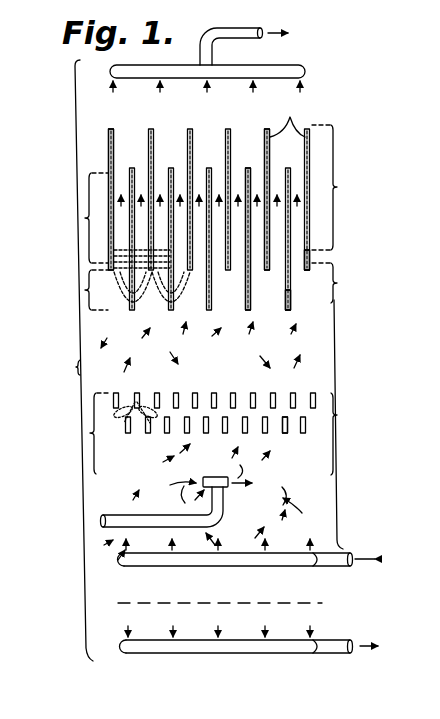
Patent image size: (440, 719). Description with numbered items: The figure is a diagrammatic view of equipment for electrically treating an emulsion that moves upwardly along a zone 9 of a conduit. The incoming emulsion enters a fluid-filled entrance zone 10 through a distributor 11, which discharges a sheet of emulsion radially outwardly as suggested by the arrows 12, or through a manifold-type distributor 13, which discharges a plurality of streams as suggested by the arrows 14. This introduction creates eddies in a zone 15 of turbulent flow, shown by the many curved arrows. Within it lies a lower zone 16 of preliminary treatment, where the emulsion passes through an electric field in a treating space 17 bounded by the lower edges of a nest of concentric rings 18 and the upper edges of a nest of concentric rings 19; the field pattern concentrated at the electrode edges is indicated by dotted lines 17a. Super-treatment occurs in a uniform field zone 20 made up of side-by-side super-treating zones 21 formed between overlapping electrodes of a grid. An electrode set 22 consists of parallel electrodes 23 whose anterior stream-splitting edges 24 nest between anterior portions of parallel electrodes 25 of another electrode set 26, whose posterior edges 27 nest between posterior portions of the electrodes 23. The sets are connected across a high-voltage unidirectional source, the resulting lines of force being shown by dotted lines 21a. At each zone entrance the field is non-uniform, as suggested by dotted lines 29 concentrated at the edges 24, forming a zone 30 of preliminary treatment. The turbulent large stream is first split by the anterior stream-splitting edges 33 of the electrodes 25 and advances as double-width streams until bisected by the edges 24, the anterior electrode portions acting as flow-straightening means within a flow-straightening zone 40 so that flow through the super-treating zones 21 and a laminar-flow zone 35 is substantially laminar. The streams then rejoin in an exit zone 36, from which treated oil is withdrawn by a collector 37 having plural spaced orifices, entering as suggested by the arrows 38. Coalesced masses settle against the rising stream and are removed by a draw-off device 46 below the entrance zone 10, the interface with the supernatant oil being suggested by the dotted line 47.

The zone of a conduit 9 is at (185, 360).
The entrance zone 10 is at (281, 495).
The distributor 11 is at (215, 477).
The arrows 12 is at (266, 486).
The manifold-type distributor 13 is at (196, 567).
The arrows 14 is at (172, 546).
The zone of turbulent flow 15 is at (365, 433).
The lower zone of preliminary treatment 16 is at (90, 433).
The treating space 17 is at (305, 411).
The dotted lines 17a is at (146, 436).
The nest of concentric rings 18 is at (295, 397).
The nest of concentric rings 19 is at (286, 434).
The uniform field zone 20 is at (85, 218).
The super-treating zones 21 is at (209, 219).
The dotted lines 21a is at (110, 252).
The electrode set 22 is at (265, 127).
The parallel electrodes 23 is at (282, 119).
The anterior stream-splitting edges 24 is at (308, 272).
The parallel electrodes 25 is at (289, 298).
The electrode set 26 is at (297, 309).
The posterior edges 27 is at (248, 166).
The dotted lines 29 is at (151, 307).
The zone of preliminary treatment 30 is at (85, 290).
The anterior stream-splitting edges 33 is at (305, 300).
The laminar-flow zone 35 is at (345, 187).
The exit zone 36 is at (312, 99).
The collector 37 is at (273, 61).
The arrows 38 is at (116, 86).
The flow-straightening zone 40 is at (364, 280).
The draw-off device 46 is at (297, 654).
The dotted line 47 is at (322, 603).